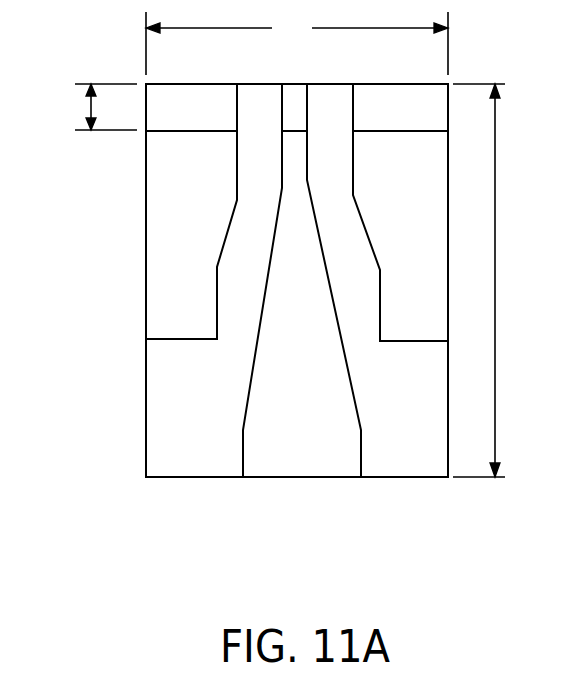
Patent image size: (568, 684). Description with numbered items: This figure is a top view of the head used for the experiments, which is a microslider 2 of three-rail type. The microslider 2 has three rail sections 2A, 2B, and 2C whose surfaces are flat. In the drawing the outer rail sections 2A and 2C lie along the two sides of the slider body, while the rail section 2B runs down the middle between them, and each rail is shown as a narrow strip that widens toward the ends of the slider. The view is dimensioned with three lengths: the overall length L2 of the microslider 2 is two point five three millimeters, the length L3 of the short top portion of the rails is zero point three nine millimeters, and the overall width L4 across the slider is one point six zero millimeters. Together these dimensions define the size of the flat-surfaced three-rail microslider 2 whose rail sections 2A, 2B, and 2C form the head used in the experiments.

The microslider 2 is at (131, 379).
The rail section 2A is at (160, 245).
The rail section 2B is at (285, 456).
The rail section 2C is at (416, 255).
The length dimension L2 is at (483, 280).
The length dimension L3 is at (87, 107).
The length dimension L4 is at (297, 43).